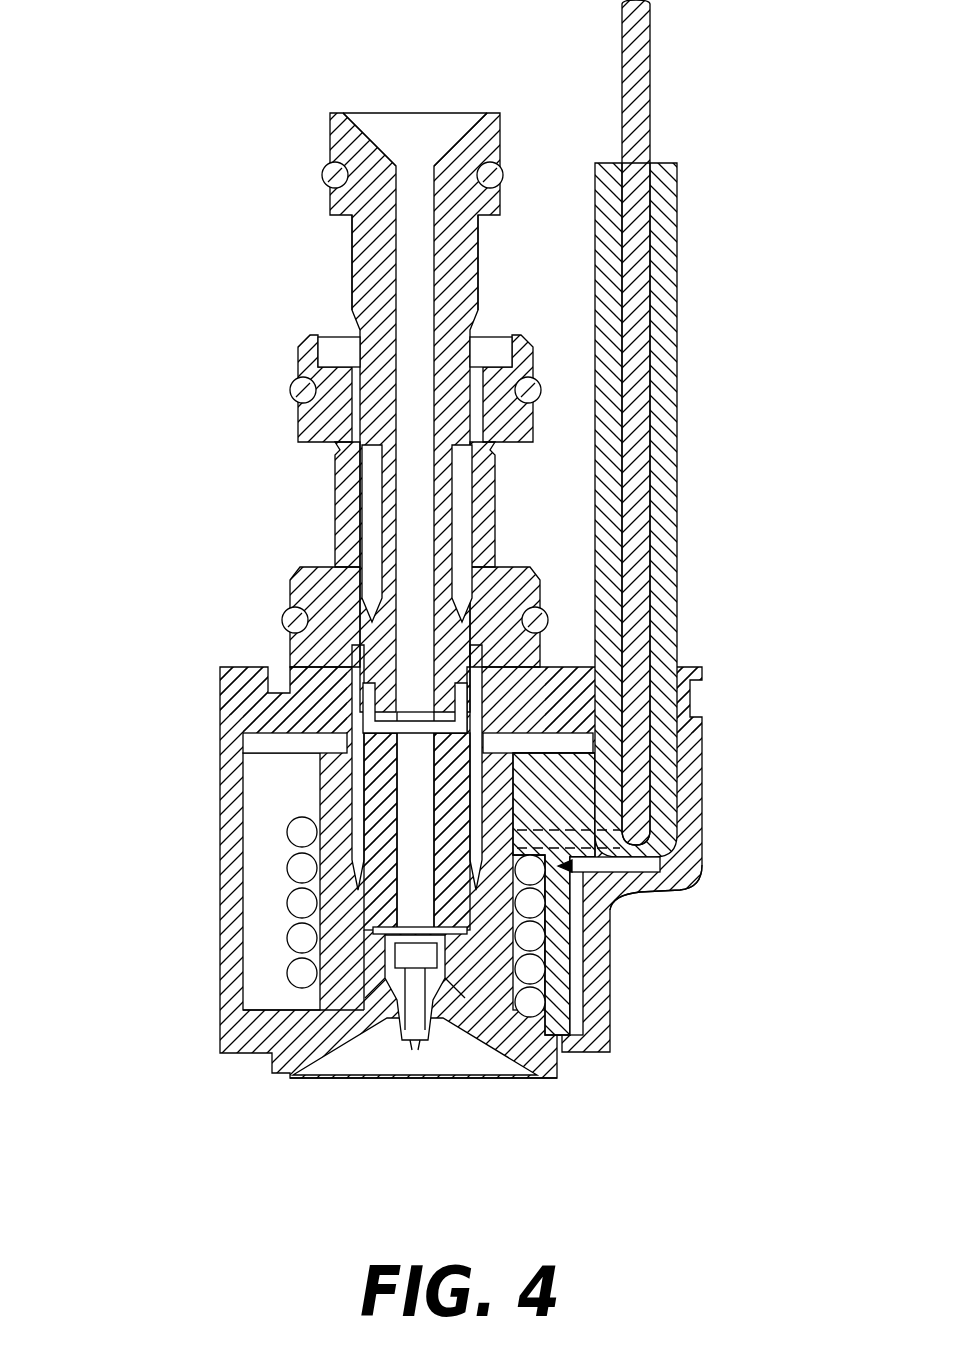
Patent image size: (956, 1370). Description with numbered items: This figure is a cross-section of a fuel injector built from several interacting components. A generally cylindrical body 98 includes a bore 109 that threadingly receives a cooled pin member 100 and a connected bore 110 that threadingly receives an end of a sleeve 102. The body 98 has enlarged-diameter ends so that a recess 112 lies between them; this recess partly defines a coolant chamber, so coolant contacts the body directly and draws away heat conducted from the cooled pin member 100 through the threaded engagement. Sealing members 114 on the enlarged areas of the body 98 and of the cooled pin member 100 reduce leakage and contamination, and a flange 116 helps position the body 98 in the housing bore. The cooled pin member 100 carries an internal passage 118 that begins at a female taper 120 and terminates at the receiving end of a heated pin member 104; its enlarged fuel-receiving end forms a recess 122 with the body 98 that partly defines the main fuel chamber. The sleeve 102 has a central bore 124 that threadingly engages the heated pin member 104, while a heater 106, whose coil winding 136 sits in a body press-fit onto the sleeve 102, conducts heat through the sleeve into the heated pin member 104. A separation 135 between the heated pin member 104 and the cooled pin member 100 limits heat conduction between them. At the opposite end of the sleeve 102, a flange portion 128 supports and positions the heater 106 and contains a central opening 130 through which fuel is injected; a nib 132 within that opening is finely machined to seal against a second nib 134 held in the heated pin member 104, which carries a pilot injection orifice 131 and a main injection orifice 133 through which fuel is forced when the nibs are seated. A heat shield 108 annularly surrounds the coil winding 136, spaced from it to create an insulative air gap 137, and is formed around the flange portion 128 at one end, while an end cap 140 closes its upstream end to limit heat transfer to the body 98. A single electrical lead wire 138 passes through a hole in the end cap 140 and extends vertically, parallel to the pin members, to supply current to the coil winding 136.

The body 98 is at (308, 355).
The cooled pin member 100 is at (472, 336).
The sleeve 102 is at (497, 893).
The heated pin member 104 is at (382, 900).
The heater 106 is at (622, 905).
The heat shield 108 is at (572, 866).
The bore 109 is at (358, 338).
The connected bore 110 is at (345, 640).
The recess 112 is at (500, 490).
The sealing members 114 is at (324, 180).
The flange 116 is at (276, 650).
The internal passage 118 is at (395, 188).
The female taper 120 is at (448, 150).
The recess 122 is at (478, 270).
The central bore 124 is at (370, 978).
The flange portion 128 is at (540, 1043).
The central opening 130 is at (455, 1040).
The pilot injection orifice 131 is at (418, 1048).
The nib 132 is at (345, 1010).
The main injection orifice 133 is at (410, 1045).
The second nib 134 is at (395, 1040).
The separation 135 is at (485, 620).
The coil winding 136 is at (296, 825).
The insulative air gap 137 is at (680, 815).
The electrical lead wire 138 is at (632, 60).
The end cap 140 is at (268, 690).